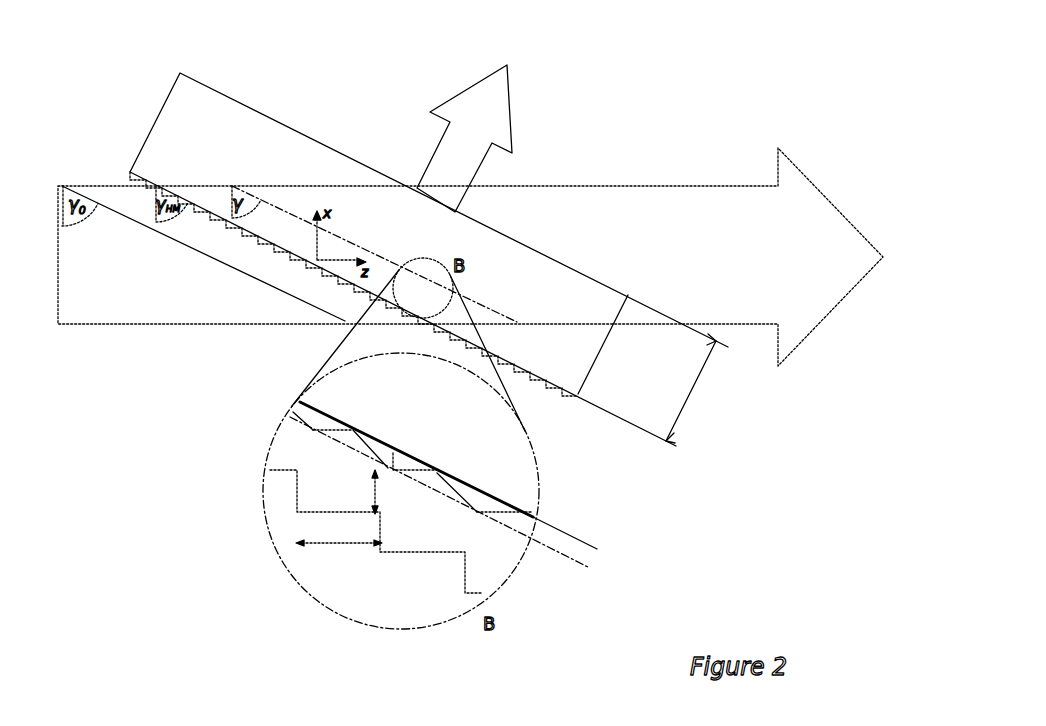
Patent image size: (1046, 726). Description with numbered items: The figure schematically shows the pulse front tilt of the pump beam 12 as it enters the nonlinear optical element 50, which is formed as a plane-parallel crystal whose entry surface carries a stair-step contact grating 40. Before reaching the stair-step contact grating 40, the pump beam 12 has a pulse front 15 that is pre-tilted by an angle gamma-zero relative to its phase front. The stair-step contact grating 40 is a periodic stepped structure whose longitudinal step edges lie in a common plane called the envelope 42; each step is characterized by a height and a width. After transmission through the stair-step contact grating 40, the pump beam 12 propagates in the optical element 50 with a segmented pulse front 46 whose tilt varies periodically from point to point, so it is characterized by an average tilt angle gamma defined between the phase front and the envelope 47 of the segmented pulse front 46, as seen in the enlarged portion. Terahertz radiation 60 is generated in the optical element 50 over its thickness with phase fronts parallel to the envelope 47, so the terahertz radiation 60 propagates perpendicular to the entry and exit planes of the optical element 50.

The pump beam 12 is at (806, 196).
The pulse front 15 is at (195, 247).
The stair-step contact grating 40 is at (500, 563).
The envelope 42 is at (620, 415).
The segmented pulse front 46 is at (500, 313).
The envelope 47 is at (513, 505).
The optical element 50 is at (158, 118).
The terahertz radiation 60 is at (505, 92).